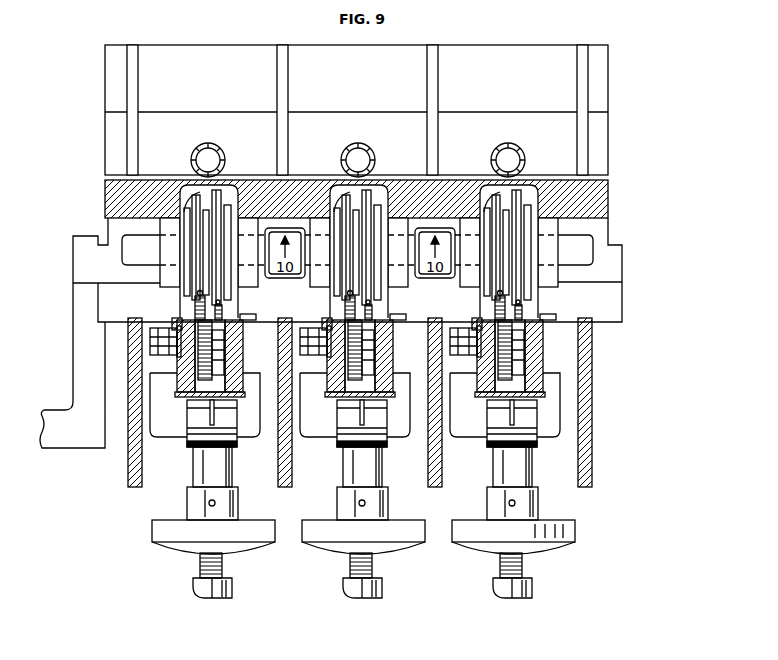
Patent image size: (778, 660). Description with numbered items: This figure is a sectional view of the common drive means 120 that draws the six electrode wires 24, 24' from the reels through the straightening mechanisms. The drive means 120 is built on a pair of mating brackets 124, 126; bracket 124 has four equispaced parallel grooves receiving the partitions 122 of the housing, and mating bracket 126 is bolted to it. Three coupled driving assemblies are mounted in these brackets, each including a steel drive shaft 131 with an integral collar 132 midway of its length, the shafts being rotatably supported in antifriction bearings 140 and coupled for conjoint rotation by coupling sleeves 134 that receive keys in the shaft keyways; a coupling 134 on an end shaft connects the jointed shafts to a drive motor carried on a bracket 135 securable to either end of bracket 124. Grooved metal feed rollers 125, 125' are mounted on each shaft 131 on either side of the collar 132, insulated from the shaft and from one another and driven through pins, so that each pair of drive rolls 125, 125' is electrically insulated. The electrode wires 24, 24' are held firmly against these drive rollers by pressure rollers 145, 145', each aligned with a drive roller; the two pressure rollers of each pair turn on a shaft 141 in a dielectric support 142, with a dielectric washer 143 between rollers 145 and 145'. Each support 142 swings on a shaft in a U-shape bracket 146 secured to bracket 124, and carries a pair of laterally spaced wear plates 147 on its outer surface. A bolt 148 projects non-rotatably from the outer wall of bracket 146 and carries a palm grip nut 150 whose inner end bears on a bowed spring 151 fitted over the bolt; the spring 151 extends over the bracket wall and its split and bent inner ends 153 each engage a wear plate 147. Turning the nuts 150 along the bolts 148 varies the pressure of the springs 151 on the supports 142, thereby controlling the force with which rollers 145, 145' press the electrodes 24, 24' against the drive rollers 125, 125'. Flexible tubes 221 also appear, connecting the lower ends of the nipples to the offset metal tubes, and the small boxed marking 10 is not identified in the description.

The tube 10 is at (360, 255).
The electrode wire 24 is at (477, 306).
The electrode wire 24' is at (540, 306).
The common drive means 120 is at (60, 216).
The partitions 122 is at (280, 72).
The bracket 124 is at (605, 314).
The drive roll 125 is at (327, 257).
The drive roll 125' is at (393, 243).
The mating bracket 126 is at (608, 198).
The drive shaft 131 is at (145, 256).
The collar 132 is at (198, 204).
The coupling sleeve 134 is at (284, 228).
The bracket 135 is at (92, 356).
The antifriction bearings 140 is at (170, 278).
The shaft 141 is at (180, 322).
The dielectric support 142 is at (237, 438).
The dielectric washer 143 is at (225, 314).
The pressure roller 145 is at (312, 349).
The pressure roller 145' is at (396, 352).
The U-shape bracket 146 is at (158, 407).
The wear plates 147 is at (183, 406).
The bolt 148 is at (202, 585).
The palm grip nut 150 is at (237, 545).
The bowed spring 151 is at (190, 450).
The split and bent inner ends 153 is at (362, 417).
The flexible tubes 221 is at (196, 149).